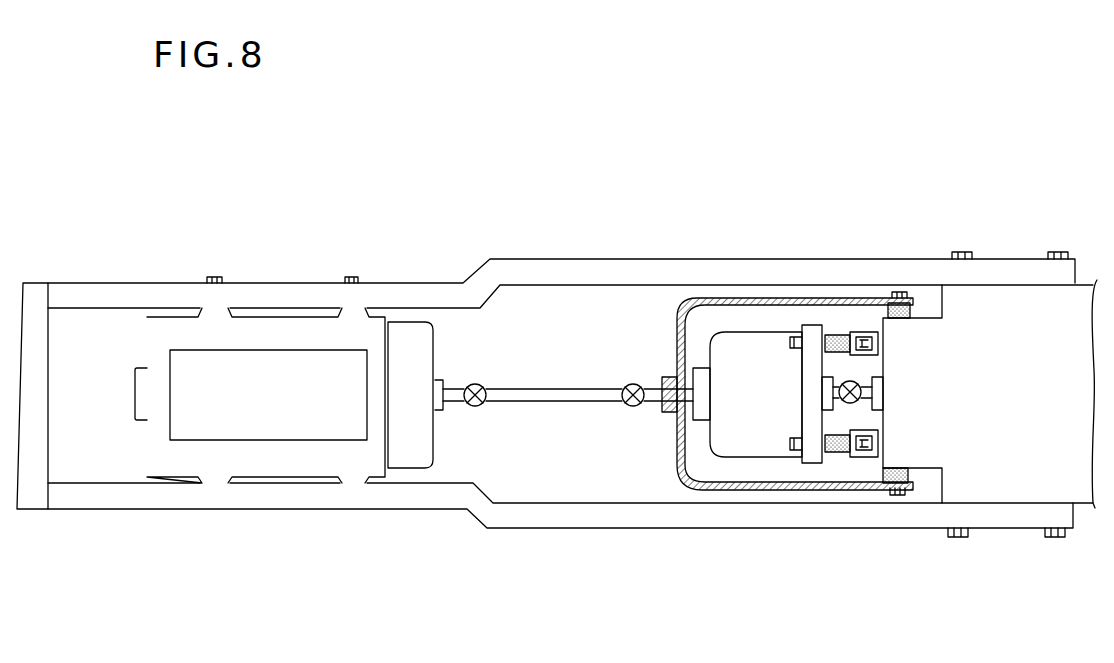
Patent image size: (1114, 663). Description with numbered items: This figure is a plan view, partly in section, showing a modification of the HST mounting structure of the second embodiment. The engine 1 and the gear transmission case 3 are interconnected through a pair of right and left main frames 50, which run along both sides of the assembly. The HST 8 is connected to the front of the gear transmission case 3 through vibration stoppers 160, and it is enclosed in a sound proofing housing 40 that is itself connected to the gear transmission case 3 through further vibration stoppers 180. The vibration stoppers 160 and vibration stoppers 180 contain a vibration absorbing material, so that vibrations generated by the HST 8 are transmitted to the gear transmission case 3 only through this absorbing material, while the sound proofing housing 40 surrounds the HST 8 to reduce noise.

The engine 1 is at (278, 355).
The gear transmission case 3 is at (1013, 290).
The HST 8 is at (745, 327).
The sound proofing housing 40 is at (677, 468).
The main frames 50 is at (516, 264).
The vibration stoppers 160 is at (837, 333).
The vibration stoppers 180 is at (903, 320).